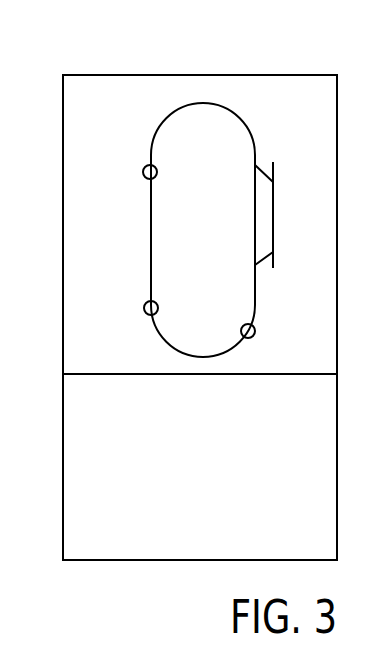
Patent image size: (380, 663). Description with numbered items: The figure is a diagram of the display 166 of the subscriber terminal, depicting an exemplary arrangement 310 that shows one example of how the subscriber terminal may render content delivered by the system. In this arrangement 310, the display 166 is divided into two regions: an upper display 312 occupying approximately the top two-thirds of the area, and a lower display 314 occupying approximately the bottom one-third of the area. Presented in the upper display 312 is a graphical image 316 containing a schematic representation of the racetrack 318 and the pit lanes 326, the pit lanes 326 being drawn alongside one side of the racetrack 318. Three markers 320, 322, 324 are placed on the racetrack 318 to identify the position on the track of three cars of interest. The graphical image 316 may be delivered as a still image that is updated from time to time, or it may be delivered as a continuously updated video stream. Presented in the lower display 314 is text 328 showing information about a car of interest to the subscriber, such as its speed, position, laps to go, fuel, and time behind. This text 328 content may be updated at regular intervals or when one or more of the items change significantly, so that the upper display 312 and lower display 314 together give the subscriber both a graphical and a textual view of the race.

The display 166 is at (150, 75).
The exemplary arrangement 310 is at (232, 75).
The upper display 312 is at (338, 98).
The lower display 314 is at (63, 410).
The graphical image 316 is at (120, 118).
The racetrack 318 is at (243, 118).
The marker 320 is at (146, 178).
The marker 322 is at (148, 314).
The marker 324 is at (253, 326).
The pit lanes 326 is at (273, 215).
The text 328 is at (215, 545).